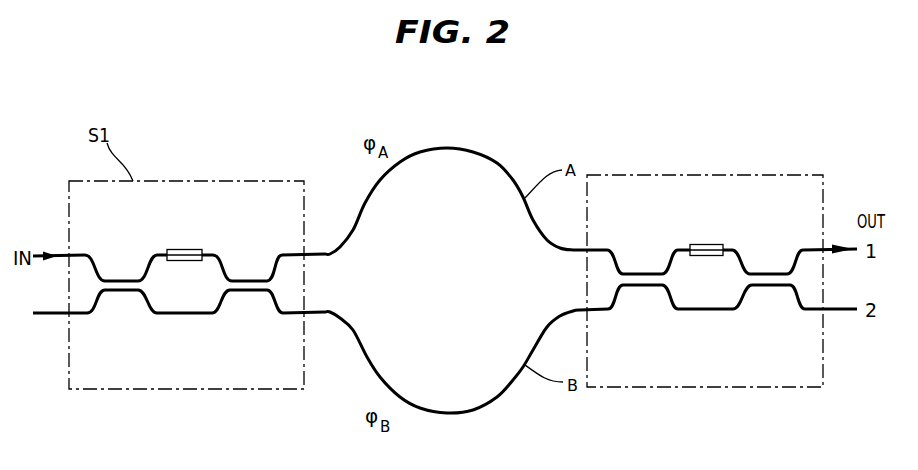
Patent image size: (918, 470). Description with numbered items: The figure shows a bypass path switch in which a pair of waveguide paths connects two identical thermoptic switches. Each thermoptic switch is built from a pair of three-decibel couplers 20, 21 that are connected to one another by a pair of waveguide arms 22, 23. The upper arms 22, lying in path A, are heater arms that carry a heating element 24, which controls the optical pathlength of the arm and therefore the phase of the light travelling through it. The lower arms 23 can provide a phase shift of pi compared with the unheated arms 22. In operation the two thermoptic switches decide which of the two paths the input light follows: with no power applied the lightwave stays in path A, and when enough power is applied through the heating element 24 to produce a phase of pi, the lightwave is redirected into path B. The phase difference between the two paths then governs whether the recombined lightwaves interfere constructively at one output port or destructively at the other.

The 3 dB coupler 20 is at (113, 279).
The 3 dB coupler 21 is at (245, 278).
The heater arm 22 is at (162, 250).
The waveguide arm 23 is at (150, 313).
The heating element 24 is at (193, 250).